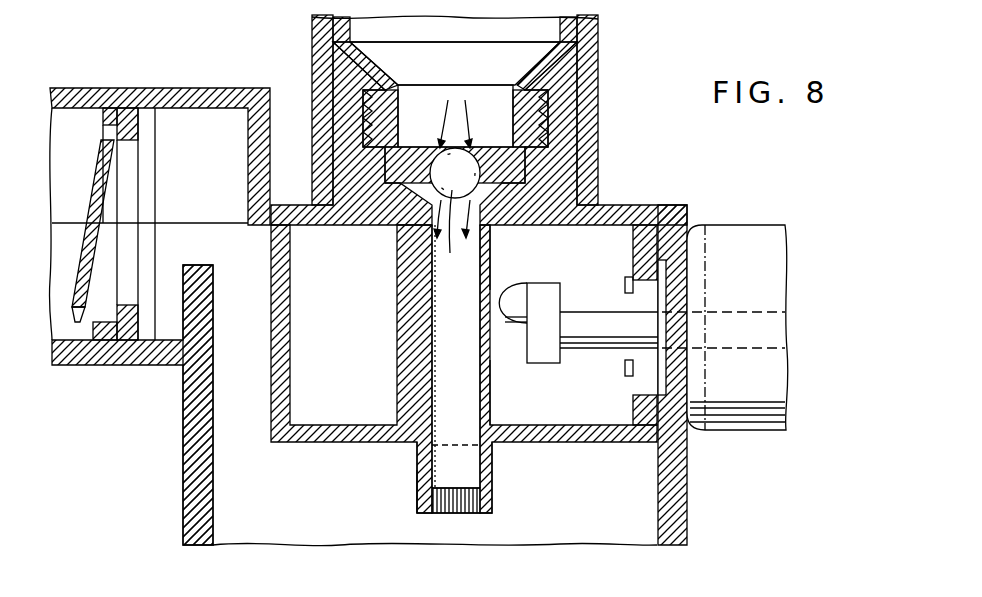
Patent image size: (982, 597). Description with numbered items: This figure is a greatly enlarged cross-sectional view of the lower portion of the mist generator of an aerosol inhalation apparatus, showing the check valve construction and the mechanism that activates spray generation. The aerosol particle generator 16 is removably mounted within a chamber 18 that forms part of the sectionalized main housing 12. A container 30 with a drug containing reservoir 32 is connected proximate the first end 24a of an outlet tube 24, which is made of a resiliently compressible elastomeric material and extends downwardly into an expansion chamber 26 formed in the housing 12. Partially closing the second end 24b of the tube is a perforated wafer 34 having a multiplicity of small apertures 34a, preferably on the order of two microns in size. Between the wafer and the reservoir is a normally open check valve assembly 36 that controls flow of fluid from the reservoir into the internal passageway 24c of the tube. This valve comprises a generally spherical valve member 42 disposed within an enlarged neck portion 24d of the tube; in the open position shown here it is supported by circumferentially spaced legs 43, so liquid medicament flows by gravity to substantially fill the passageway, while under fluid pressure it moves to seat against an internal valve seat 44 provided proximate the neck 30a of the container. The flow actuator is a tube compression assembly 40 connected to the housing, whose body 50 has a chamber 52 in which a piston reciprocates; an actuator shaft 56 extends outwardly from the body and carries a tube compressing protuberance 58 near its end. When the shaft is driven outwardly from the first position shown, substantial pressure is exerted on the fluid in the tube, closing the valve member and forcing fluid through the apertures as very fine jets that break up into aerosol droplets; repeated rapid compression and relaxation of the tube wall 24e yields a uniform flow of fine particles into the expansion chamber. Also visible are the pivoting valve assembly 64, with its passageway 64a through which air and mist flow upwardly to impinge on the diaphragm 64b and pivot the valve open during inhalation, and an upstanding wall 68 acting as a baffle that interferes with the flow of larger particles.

The main housing 12 is at (158, 60).
The aerosol particle generator 16 is at (558, 68).
The chamber 18 is at (345, 70).
The outlet tube 24 is at (417, 455).
The first end 24a is at (497, 222).
The second end 24b is at (417, 490).
The internal passageway 24c is at (432, 358).
The enlarged neck portion 24d is at (521, 217).
The tube wall 24e is at (496, 373).
The expansion chamber 26 is at (435, 516).
The container 30 is at (343, 37).
The neck 30a is at (498, 117).
The reservoir 32 is at (455, 99).
The perforated wafer 34 is at (442, 514).
The apertures 34a is at (456, 514).
The check valve assembly 36 is at (472, 126).
The compression assembly 40 is at (753, 227).
The valve member 42 is at (456, 339).
The legs 43 is at (392, 226).
The valve seat 44 is at (438, 148).
The body 50 is at (752, 431).
The chamber 52 is at (746, 287).
The actuator shaft 56 is at (592, 340).
The tube compressing protuberance 58 is at (548, 298).
The pivoting valve assembly 64 is at (88, 195).
The passageway 64a is at (133, 207).
The diaphragm 64b is at (78, 307).
The upstanding wall 68 is at (213, 283).